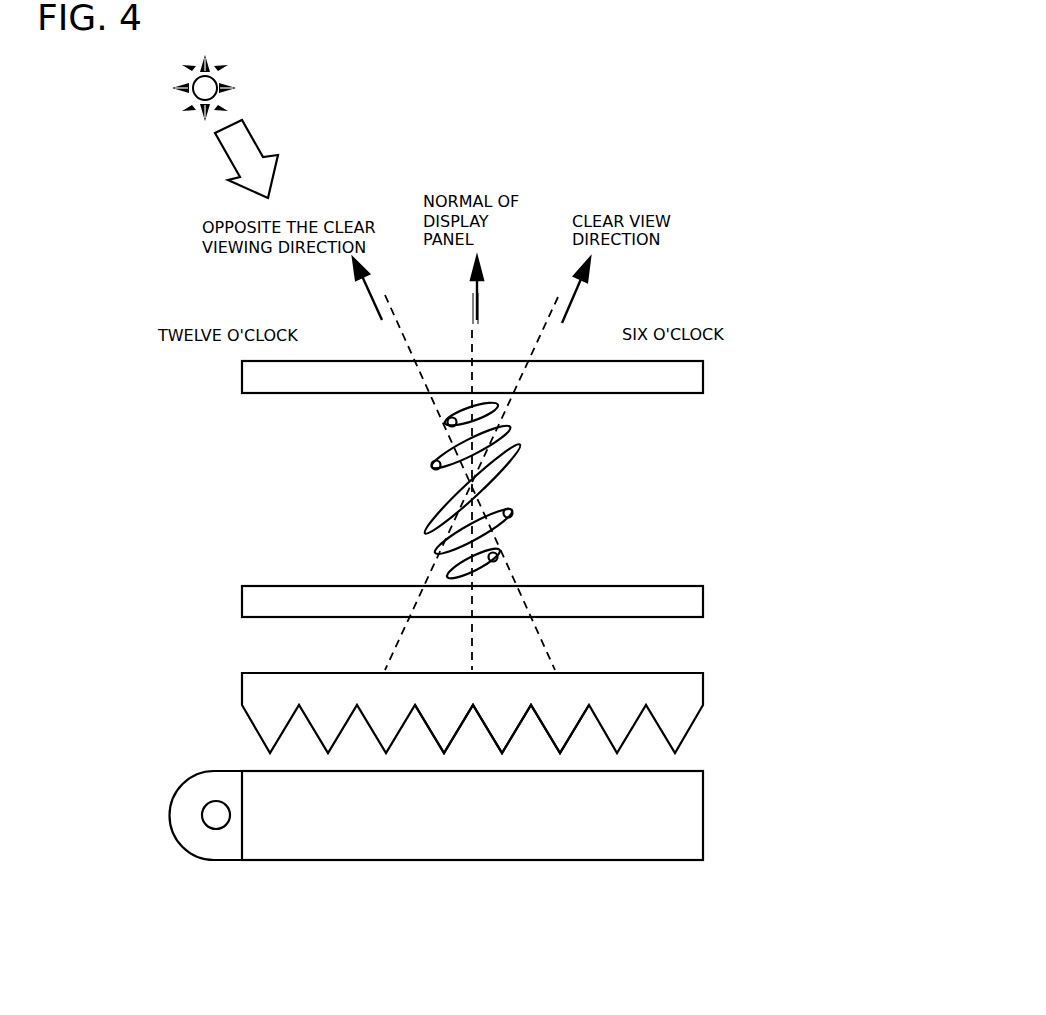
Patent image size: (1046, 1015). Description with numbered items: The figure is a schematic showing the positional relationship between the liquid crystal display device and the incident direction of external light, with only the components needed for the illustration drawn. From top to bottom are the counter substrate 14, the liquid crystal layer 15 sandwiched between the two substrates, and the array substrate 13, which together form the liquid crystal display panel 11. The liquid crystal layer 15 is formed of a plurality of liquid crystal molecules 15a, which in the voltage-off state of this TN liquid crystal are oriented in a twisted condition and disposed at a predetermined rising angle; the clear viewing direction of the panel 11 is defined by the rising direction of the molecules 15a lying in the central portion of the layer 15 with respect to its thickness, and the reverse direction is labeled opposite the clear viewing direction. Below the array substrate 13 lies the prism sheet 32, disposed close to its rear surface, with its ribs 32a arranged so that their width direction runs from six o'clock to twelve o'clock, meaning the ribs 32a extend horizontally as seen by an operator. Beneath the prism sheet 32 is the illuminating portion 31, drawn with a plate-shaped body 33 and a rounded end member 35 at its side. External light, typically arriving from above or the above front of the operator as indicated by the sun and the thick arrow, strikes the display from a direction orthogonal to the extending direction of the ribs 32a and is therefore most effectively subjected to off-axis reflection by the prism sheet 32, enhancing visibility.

The liquid crystal display panel 11 is at (735, 308).
The array substrate 13 is at (693, 608).
The counter substrate 14 is at (693, 377).
The liquid crystal layer 15 is at (682, 503).
The liquid crystal molecules 15a is at (438, 453).
The illuminating portion 31 is at (684, 866).
The prism sheet 32 is at (703, 688).
The ribs 32a is at (612, 726).
The light guide plate 33 is at (693, 825).
The light source 35 is at (203, 787).